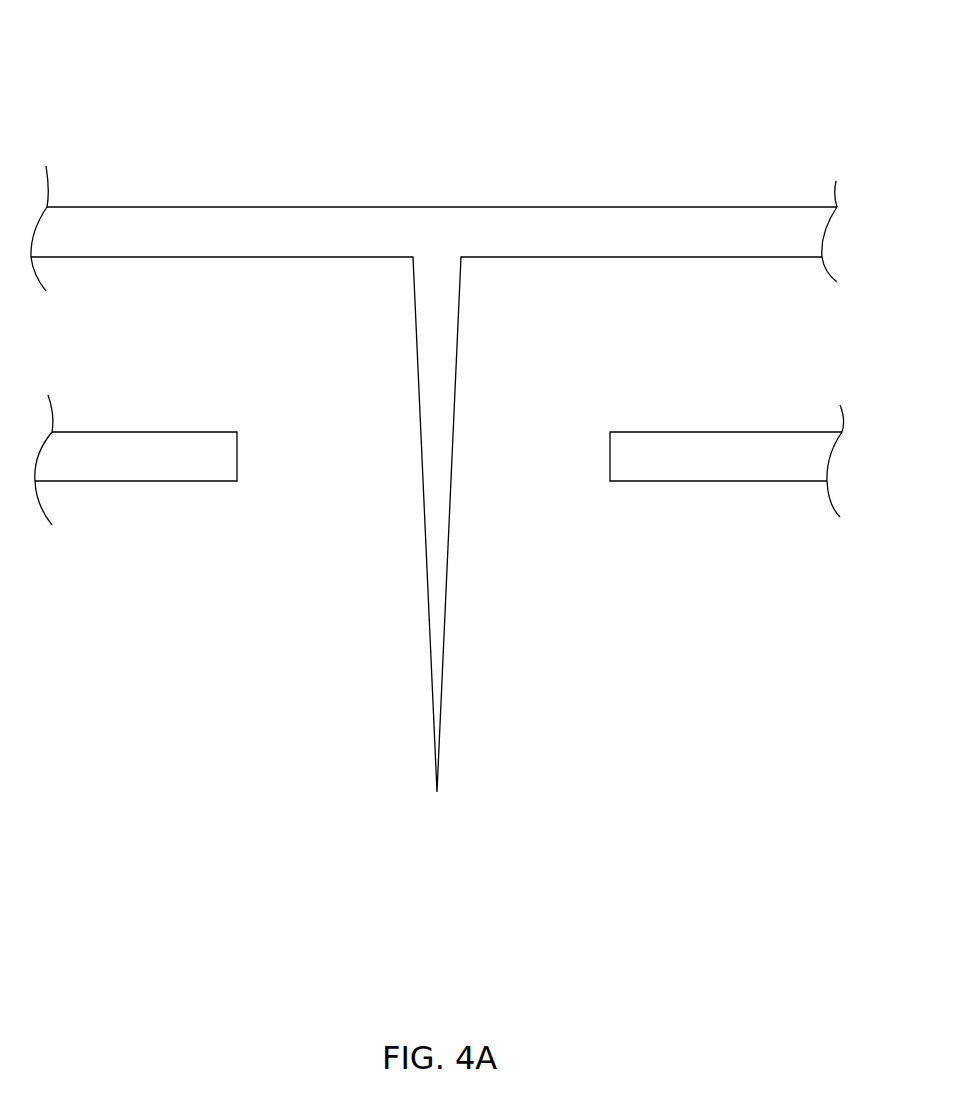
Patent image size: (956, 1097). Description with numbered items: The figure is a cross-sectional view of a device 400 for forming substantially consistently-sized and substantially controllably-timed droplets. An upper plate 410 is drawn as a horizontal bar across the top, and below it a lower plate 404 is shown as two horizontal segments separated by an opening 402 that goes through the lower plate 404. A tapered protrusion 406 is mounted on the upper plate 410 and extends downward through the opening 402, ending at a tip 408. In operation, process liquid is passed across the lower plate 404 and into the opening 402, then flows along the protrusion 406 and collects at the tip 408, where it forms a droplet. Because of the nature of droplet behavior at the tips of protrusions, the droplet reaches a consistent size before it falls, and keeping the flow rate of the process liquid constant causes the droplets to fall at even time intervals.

The device for forming droplets 400 is at (143, 64).
The opening 402 is at (437, 484).
The lower plate 404 is at (205, 483).
The protrusion 406 is at (443, 663).
The tip 408 is at (438, 790).
The upper plate 410 is at (252, 258).